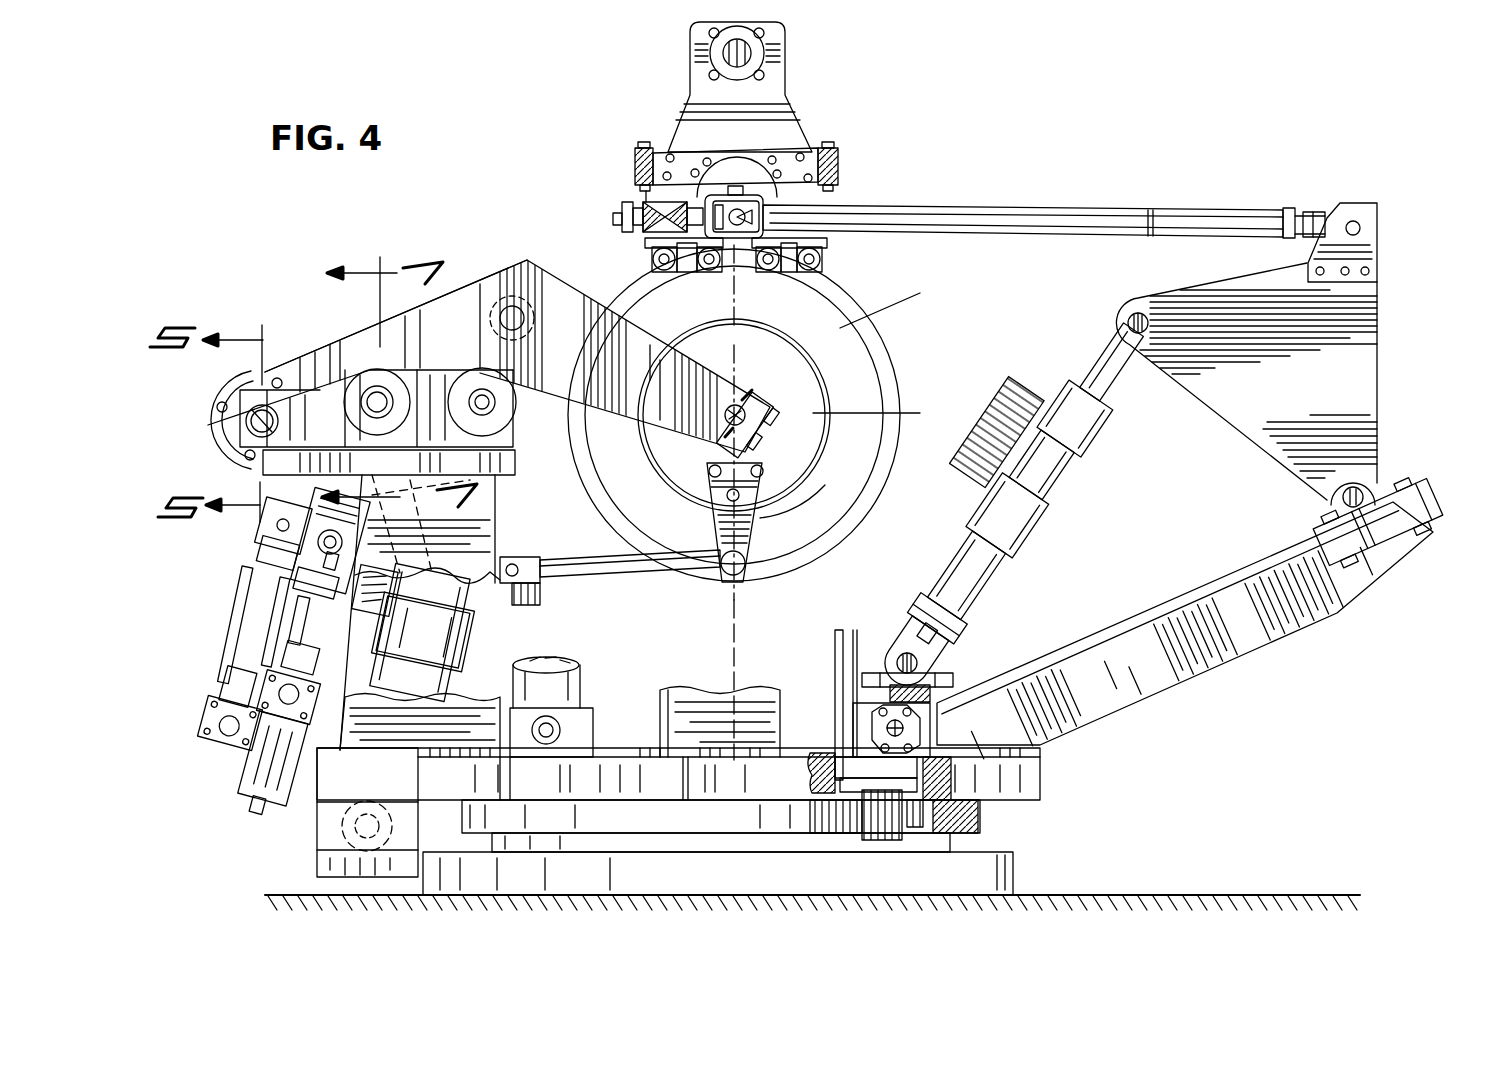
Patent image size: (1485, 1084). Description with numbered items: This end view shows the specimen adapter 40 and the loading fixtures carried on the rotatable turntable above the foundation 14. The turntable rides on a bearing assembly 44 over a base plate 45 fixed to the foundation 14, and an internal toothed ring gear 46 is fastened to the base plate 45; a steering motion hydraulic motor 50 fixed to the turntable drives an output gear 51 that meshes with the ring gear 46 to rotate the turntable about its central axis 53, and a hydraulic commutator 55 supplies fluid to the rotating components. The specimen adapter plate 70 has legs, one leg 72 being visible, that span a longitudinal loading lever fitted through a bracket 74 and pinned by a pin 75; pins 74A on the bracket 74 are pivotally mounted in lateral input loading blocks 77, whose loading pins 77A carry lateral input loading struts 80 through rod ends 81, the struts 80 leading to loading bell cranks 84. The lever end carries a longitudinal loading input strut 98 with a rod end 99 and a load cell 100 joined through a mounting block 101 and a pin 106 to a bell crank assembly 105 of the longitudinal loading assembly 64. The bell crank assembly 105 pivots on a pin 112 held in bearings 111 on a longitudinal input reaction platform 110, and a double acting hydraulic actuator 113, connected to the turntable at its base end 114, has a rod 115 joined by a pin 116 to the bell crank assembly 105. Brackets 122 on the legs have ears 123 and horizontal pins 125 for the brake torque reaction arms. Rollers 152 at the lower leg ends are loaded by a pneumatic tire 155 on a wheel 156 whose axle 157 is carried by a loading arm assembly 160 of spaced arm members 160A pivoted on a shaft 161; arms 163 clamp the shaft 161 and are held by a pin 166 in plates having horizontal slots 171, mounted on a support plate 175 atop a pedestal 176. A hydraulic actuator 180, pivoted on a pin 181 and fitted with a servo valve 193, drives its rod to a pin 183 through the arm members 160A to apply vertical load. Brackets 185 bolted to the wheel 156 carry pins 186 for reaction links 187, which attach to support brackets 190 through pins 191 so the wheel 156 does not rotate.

The foundation 14 is at (1145, 893).
The specimen adapter 40 is at (835, 52).
The bearing assembly 44 is at (947, 832).
The base plate 45 is at (1013, 872).
The internal toothed ring gear 46 is at (910, 833).
The steering motion hydraulic motor 50 is at (862, 687).
The output gear 51 is at (863, 835).
The central axis 53 is at (746, 601).
The hydraulic commutator 55 is at (660, 712).
The longitudinal loading assembly 64 is at (1238, 447).
The specimen adapter plate 70 is at (690, 95).
The leg 72 is at (843, 173).
The bracket 74 is at (640, 202).
The pins 74A is at (680, 203).
The pin 75 is at (745, 185).
The lateral input loading blocks 77 is at (827, 200).
The loading pins 77A is at (636, 236).
The lateral input loading struts 80 is at (600, 218).
The rod ends 81 is at (622, 233).
The loading bell cranks 84 is at (1363, 393).
The longitudinal loading input strut 98 is at (1030, 217).
The rod end 99 is at (713, 422).
The load cell 100 is at (1303, 207).
The mounting block 101 is at (1367, 200).
The bell crank assembly 105 is at (1392, 300).
The pin 106 is at (1349, 220).
The longitudinal input reaction platform 110 is at (1223, 583).
The bearings 111 is at (1307, 537).
The pin 112 is at (1383, 560).
The longitudinal input hydraulic actuator 113 is at (1025, 522).
The base end connection 114 is at (923, 652).
The extendable and retractable rod 115 is at (1097, 353).
The pin 116 is at (1157, 320).
The bracket 122 is at (653, 147).
The ears 123 is at (647, 147).
The horizontal pin 125 is at (635, 167).
The rollers 152 is at (690, 292).
The pneumatic tire 155 is at (852, 318).
The wheel 156 is at (828, 412).
The axle 157 is at (758, 405).
The loading arm assembly 160 is at (328, 312).
The arm members 160A is at (477, 277).
The shaft 161 is at (245, 433).
The arms 163 is at (343, 440).
The pin 166 is at (377, 393).
The horizontal slots 171 is at (466, 385).
The support plate 175 is at (263, 470).
The pedestal 176 is at (497, 530).
The vertical loading hydraulic actuator 180 is at (450, 635).
The pin 181 is at (330, 822).
The pin 183 is at (522, 330).
The brackets 185 is at (762, 512).
The pins 186 is at (750, 563).
The reaction links 187 is at (683, 567).
The support brackets 190 is at (540, 593).
The pins 191 is at (503, 560).
The servo valve 193 is at (297, 570).